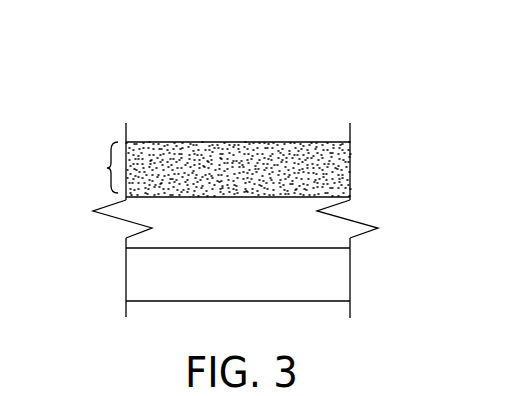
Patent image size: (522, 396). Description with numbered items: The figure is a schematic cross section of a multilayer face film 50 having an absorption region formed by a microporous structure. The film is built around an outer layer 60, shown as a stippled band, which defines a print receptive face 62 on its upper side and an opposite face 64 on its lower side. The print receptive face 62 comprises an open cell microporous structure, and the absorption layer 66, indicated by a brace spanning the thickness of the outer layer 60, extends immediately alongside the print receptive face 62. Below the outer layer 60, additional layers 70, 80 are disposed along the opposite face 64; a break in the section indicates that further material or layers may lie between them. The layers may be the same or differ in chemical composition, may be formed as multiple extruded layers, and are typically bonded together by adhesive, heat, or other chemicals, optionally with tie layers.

The multilayer face film 50 is at (113, 97).
The outer layer 60 is at (333, 168).
The print receptive face 62 is at (263, 141).
The opposite face 64 is at (136, 195).
The absorption layer 66 is at (98, 167).
The additional layer 70 is at (325, 227).
The additional layer 80 is at (333, 283).